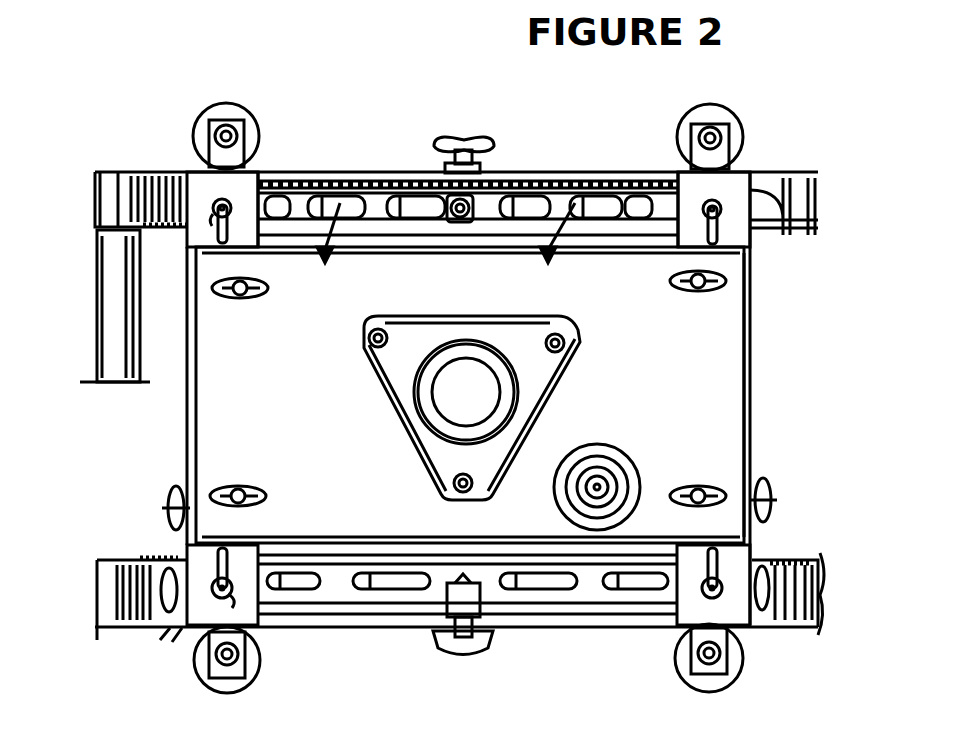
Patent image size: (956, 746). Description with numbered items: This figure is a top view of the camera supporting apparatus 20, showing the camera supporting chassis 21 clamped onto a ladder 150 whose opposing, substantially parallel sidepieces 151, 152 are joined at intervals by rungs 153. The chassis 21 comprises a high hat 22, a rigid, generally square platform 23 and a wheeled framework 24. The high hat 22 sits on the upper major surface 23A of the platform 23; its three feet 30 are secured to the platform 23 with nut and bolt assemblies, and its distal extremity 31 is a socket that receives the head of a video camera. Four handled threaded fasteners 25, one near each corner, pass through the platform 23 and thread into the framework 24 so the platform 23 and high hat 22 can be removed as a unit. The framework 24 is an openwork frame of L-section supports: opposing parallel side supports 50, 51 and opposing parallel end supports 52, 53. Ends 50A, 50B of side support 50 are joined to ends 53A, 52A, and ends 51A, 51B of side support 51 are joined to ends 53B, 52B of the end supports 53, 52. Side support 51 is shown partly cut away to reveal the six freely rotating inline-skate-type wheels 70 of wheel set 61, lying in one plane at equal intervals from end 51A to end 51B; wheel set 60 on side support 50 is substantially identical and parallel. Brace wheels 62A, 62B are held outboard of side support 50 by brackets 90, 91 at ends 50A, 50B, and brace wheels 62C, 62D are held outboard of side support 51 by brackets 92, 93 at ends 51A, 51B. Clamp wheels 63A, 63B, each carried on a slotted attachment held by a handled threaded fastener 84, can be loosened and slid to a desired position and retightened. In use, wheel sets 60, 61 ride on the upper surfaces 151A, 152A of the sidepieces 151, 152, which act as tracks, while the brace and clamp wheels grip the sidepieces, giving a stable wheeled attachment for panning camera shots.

The camera supporting apparatus 20 is at (323, 130).
The camera supporting chassis 21 is at (183, 447).
The high hat 22 is at (545, 395).
The platform 23 is at (728, 380).
The upper major surface 23A is at (597, 433).
The wheeled framework 24 is at (158, 638).
The handled threaded fasteners 25 is at (250, 478).
The feet 30 is at (578, 322).
The distal extremity 31 is at (433, 410).
The side support 50 is at (550, 628).
The end of side support 50 50A is at (277, 603).
The end of side support 50 50B is at (650, 620).
The side support 51 is at (392, 170).
The end of side support 51 51A is at (285, 170).
The end of side support 51 51B is at (665, 170).
The end support 52 is at (748, 425).
The end of end support 52 52A is at (750, 626).
The end of end support 52 52B is at (783, 235).
The end support 53 is at (190, 403).
The end of end support 53 53A is at (187, 626).
The end of end support 53 53B is at (93, 170).
The wheel set 60 is at (395, 625).
The wheel set 61 is at (517, 205).
The brace wheel 62A is at (222, 694).
The brace wheel 62B is at (735, 690).
The brace wheel 62C is at (222, 113).
The brace wheel 62D is at (716, 120).
The clamp wheel 63A is at (505, 628).
The clamp wheel 63B is at (430, 165).
The wheels 70 is at (333, 262).
The handled threaded fastener 84 is at (475, 158).
The bracket 90 is at (252, 665).
The bracket 91 is at (686, 672).
The bracket 92 is at (203, 140).
The bracket 93 is at (738, 165).
The ladder 150 is at (95, 628).
The sidepiece 151 is at (108, 590).
The upper surface 151A is at (795, 553).
The sidepiece 152 is at (125, 178).
The upper surface 152A is at (793, 178).
The rungs 153 is at (112, 324).